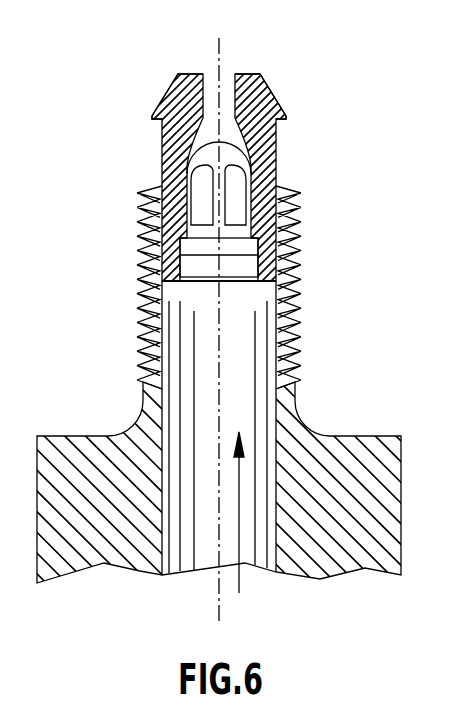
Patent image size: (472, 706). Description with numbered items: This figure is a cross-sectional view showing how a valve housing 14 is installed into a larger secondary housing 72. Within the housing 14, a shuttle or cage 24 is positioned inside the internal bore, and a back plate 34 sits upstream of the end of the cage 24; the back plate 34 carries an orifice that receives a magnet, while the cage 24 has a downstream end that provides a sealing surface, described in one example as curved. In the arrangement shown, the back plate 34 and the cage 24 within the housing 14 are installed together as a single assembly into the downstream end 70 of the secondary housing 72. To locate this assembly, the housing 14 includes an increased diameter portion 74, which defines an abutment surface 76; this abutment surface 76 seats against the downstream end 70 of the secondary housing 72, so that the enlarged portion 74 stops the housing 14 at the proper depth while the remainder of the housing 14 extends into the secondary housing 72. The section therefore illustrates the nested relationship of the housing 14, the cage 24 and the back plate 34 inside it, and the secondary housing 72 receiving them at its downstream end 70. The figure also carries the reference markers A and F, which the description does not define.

The housing 14 is at (277, 147).
The shuttle or cage 24 is at (207, 145).
The back plate 34 is at (188, 239).
The downstream end 70 is at (277, 180).
The secondary housing 72 is at (300, 435).
The increased diameter portion 74 is at (170, 90).
The abutment surface 76 is at (151, 124).
The axis A is at (217, 40).
The flow direction F is at (240, 530).